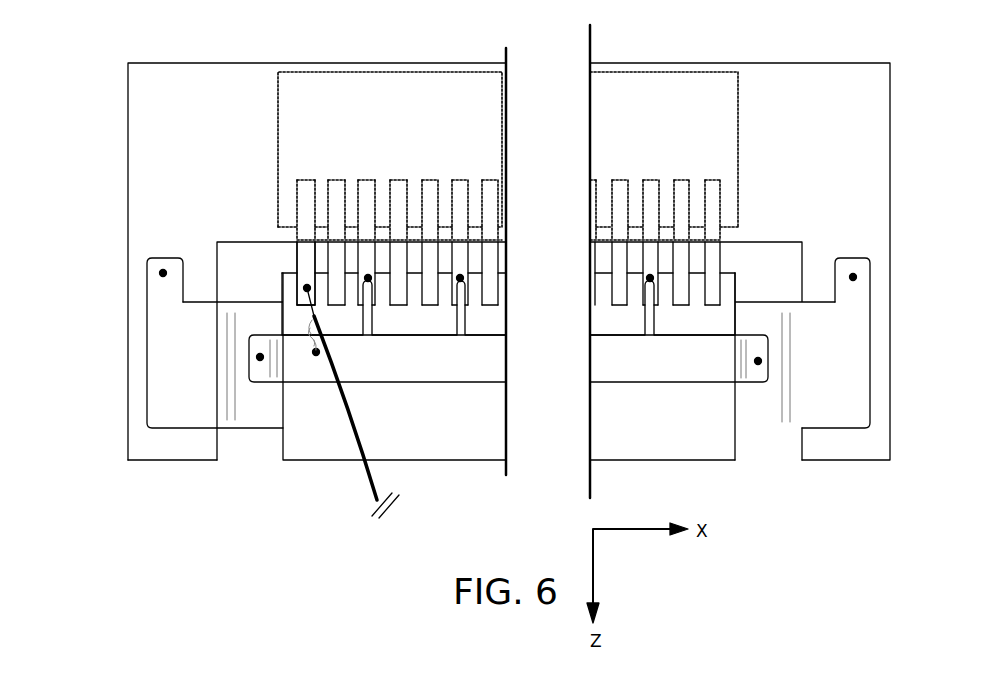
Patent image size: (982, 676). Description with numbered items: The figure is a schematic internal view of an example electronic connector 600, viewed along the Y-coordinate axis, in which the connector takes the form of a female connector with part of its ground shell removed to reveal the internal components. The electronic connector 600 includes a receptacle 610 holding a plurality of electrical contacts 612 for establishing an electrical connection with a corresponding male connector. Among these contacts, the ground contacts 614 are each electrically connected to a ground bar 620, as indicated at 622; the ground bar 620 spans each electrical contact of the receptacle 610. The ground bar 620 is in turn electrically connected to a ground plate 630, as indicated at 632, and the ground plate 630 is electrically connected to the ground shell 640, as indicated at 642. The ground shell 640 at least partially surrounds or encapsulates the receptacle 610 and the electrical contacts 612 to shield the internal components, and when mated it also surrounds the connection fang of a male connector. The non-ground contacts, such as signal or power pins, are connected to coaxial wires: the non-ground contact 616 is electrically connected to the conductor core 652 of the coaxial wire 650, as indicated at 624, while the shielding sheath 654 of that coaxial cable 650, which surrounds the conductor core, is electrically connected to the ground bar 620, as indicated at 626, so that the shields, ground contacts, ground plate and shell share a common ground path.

The electronic connector 600 is at (180, 55).
The receptacle 610 is at (445, 88).
The electrical contacts 612 is at (506, 208).
The ground contacts 614 is at (460, 256).
The non-ground contact 616 is at (305, 253).
The ground bar 620 is at (642, 358).
The electrical connection of ground contacts to ground bar 622 is at (463, 279).
The electrical connection of non-ground contact to conductor core 624 is at (307, 288).
The electrical connection of shielding sheath to ground bar 626 is at (316, 352).
The ground plate 630 is at (168, 387).
The electrical connection of ground bar to ground plate 632 is at (258, 357).
The ground shell 640 is at (158, 242).
The electrical connection of ground plate to ground shell 642 is at (163, 273).
The coaxial wire 650 is at (370, 480).
The conductor core 652 is at (310, 312).
The shielding sheath 654 is at (310, 333).